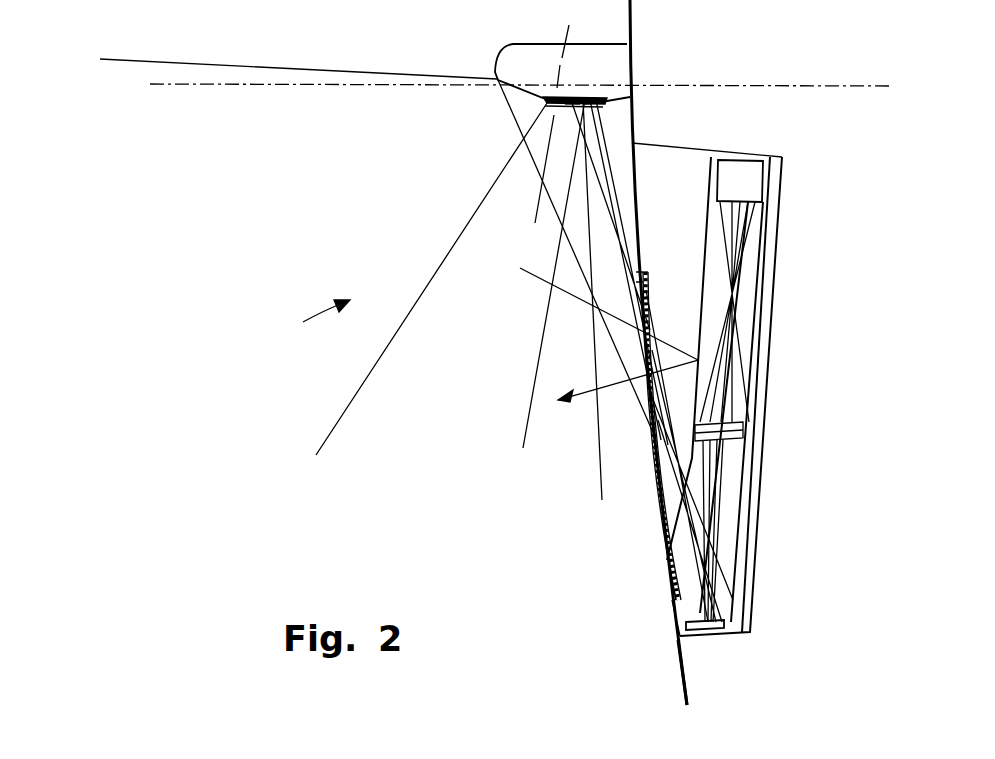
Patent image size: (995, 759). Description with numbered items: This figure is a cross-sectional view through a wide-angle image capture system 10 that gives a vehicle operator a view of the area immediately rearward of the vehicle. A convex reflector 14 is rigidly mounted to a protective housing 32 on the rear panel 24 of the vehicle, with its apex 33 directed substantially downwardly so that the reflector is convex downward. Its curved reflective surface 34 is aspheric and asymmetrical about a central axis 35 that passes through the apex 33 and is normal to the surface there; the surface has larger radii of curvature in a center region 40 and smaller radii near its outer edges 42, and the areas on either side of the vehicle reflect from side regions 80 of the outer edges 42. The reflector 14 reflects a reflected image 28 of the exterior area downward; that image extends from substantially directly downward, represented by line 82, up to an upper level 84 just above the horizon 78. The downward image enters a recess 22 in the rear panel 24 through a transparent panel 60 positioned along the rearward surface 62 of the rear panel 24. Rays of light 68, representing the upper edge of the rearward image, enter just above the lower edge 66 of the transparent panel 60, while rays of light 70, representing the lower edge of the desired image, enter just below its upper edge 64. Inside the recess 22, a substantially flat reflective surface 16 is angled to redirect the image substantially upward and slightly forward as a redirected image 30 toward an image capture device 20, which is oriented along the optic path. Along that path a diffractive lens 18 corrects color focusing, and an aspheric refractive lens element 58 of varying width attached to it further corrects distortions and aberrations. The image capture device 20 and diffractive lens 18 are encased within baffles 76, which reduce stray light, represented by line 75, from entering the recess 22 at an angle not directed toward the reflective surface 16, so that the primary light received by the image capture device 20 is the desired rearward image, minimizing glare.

The wide-angle image capture system 10 is at (309, 316).
The convex reflector 14 is at (560, 103).
The reflective surface 16 is at (707, 632).
The diffractive lens 18 is at (738, 440).
The image capture device 20 is at (745, 182).
The recess 22 is at (678, 168).
The rear panel 24 is at (680, 657).
The reflected image 28 is at (577, 327).
The redirected image 30 is at (720, 495).
The protective housing 32 is at (540, 50).
The apex 33 is at (566, 106).
The reflective surface 34 is at (545, 104).
The central axis 35 is at (569, 25).
The center region 40 is at (570, 105).
The outer edges 42 is at (507, 84).
The aspheric refractive lens element 58 is at (744, 423).
The transparent panel 60 is at (655, 305).
The rearward surface 62 is at (673, 613).
The upper edge 64 is at (647, 303).
The lower edge 66 is at (673, 583).
The rays of light 68 is at (653, 496).
The rays of light 70 is at (640, 277).
The stray light 75 is at (537, 279).
The baffles 76 is at (760, 273).
The horizon 78 is at (283, 84).
The side regions 80 is at (578, 96).
The line directly downward 82 is at (601, 433).
The upper level 84 is at (267, 72).